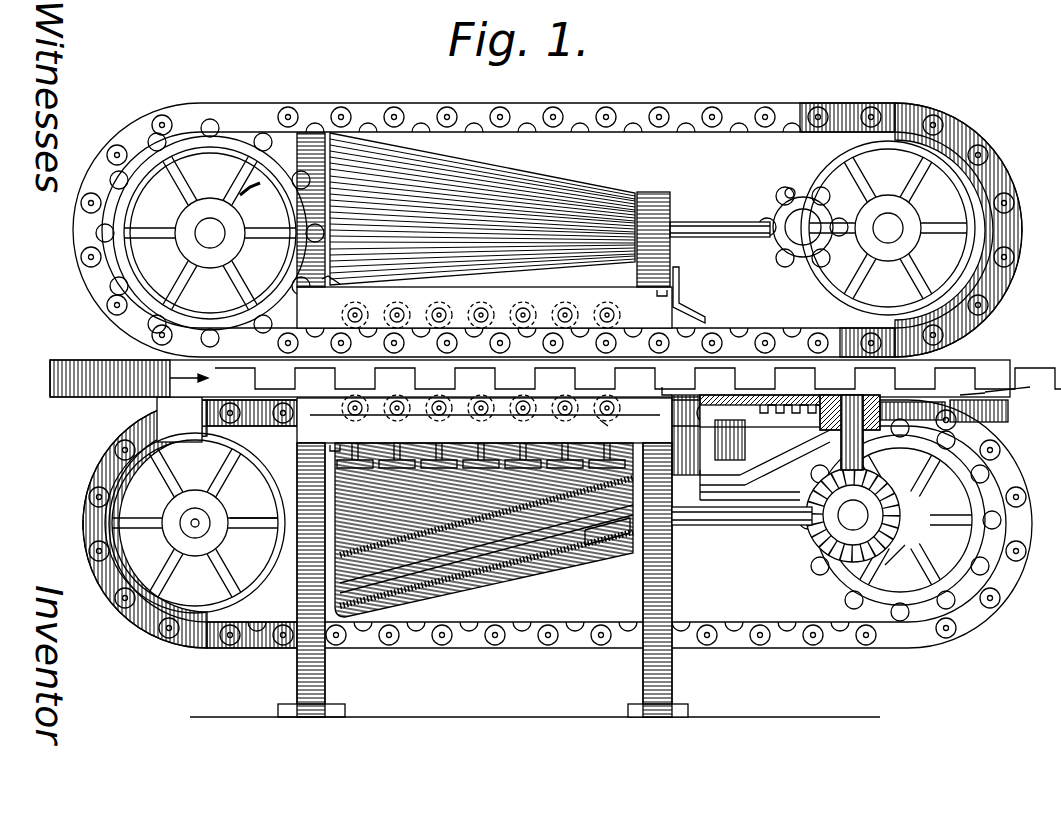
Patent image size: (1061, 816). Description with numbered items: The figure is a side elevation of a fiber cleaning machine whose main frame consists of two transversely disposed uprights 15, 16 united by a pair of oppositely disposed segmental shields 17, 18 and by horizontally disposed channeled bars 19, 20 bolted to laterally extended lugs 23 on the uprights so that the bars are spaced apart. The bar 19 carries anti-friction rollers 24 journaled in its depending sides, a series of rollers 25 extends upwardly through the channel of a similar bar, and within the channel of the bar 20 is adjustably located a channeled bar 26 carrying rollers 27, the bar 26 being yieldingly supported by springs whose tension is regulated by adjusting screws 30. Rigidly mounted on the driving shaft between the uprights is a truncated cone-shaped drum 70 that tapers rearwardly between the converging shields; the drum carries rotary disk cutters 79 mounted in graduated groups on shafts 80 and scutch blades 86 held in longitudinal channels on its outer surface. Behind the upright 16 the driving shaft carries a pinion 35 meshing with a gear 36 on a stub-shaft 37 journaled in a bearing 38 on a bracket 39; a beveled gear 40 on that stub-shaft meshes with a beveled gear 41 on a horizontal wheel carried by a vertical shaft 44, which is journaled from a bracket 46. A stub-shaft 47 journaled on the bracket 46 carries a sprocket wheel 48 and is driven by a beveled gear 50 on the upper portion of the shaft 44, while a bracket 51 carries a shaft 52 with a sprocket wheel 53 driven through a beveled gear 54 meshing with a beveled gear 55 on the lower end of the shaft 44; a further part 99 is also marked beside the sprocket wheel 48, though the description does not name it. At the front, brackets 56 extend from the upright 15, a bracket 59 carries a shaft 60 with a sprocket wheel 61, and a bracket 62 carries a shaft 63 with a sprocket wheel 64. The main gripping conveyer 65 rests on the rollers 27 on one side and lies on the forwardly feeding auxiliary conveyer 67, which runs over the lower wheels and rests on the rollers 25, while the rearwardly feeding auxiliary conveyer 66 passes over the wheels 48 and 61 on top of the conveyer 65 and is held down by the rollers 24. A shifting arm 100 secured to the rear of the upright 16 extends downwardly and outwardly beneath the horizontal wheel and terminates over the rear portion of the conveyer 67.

The upright 15 is at (297, 676).
The upright 16 is at (672, 676).
The segmental shield 17 is at (540, 185).
The segmental shield 18 is at (520, 522).
The channeled bar 19 is at (484, 358).
The channeled bar 20 is at (484, 419).
The lug 23 is at (660, 445).
The anti-friction roller 24 is at (524, 303).
The roller 25 is at (340, 284).
The channeled bar 26 is at (606, 416).
The roller 27 is at (552, 415).
The adjusting screw 30 is at (680, 520).
The pinion 35 is at (690, 395).
The gear 36 is at (688, 475).
The stub-shaft 37 is at (740, 495).
The bearing 38 is at (740, 395).
The bracket 39 is at (765, 460).
The beveled gear 40 is at (735, 445).
The beveled gear 41 is at (990, 400).
The vertical shaft 44 is at (880, 470).
The bracket 46 is at (722, 222).
The stub-shaft 47 is at (903, 224).
The sprocket wheel 48 is at (780, 256).
The beveled gear 50 is at (900, 240).
The bracket 51 is at (775, 526).
The shaft 52 is at (825, 560).
The sprocket wheel 53 is at (900, 520).
The beveled gear 54 is at (893, 560).
The beveled gear 55 is at (950, 470).
The bracket 56 is at (220, 480).
The bracket 59 is at (252, 192).
The shaft 60 is at (182, 233).
The sprocket wheel 61 is at (100, 264).
The bracket 62 is at (254, 519).
The shaft 63 is at (194, 528).
The sprocket wheel 64 is at (83, 525).
The main gripping conveyer 65 is at (80, 361).
The rearwardly feeding auxiliary conveyer 66 is at (600, 103).
The forwardly feeding auxiliary conveyer 67 is at (200, 645).
The truncated cone-shaped drum 70 is at (488, 560).
The rotary disk cutter 79 is at (608, 548).
The shaft 80 is at (405, 600).
The scutch blade 86 is at (455, 575).
The pin 99 is at (785, 190).
The shifting arm 100 is at (1005, 392).